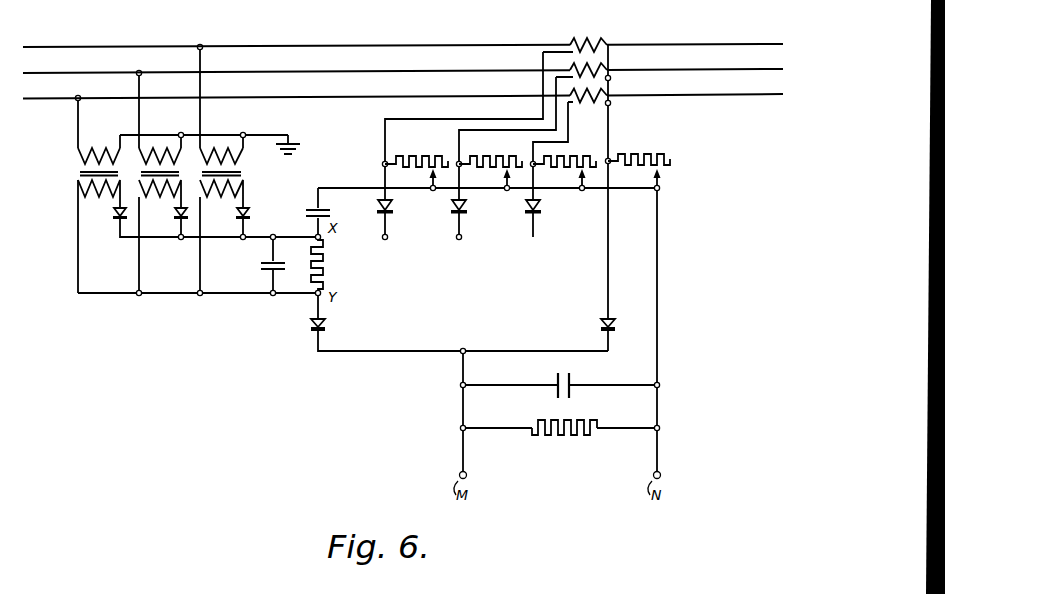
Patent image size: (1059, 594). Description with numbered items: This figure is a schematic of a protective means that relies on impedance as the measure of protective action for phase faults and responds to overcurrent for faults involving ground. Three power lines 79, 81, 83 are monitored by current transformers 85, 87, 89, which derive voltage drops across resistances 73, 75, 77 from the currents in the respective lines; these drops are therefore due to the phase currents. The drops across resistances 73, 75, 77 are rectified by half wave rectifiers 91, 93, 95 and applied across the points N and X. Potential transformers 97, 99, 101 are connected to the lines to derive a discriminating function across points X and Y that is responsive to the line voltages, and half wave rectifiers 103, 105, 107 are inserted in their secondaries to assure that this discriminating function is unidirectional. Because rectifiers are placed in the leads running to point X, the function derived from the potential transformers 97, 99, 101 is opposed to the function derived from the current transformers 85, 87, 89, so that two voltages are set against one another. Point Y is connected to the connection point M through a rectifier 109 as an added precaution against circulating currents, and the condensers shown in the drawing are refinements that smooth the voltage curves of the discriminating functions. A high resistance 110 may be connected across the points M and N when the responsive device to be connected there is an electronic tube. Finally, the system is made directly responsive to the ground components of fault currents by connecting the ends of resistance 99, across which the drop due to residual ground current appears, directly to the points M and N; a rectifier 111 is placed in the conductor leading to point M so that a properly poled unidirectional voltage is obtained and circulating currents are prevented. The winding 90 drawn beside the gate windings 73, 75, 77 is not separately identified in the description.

The resistance 73 is at (441, 152).
The resistance 75 is at (514, 152).
The resistance 77 is at (567, 153).
The line 79 is at (360, 46).
The line 81 is at (360, 72).
The line 83 is at (360, 97).
The current transformer 85 is at (607, 40).
The current transformer 87 is at (607, 65).
The current transformer 89 is at (607, 92).
The gate winding 90 is at (662, 153).
The half wave rectifier 91 is at (403, 207).
The half wave rectifier 93 is at (467, 214).
The half wave rectifier 95 is at (541, 214).
The potential transformer 97 is at (80, 173).
The potential transformer 99 is at (141, 174).
The potential transformer 101 is at (204, 174).
The half wave rectifier 103 is at (118, 222).
The half wave rectifier 105 is at (178, 218).
The half wave rectifier 107 is at (240, 218).
The rectifier 109 is at (325, 325).
The high resistance 110 is at (588, 438).
The rectifier 111 is at (602, 323).